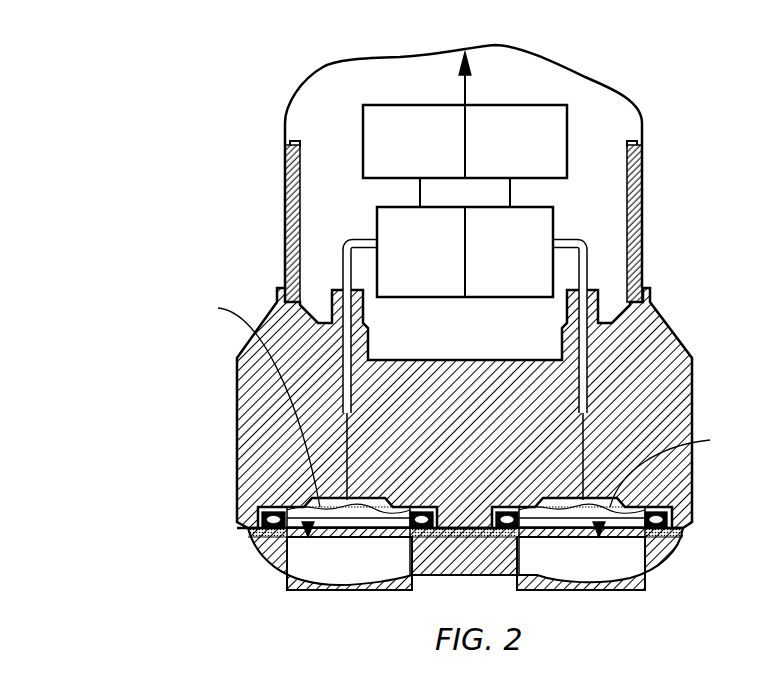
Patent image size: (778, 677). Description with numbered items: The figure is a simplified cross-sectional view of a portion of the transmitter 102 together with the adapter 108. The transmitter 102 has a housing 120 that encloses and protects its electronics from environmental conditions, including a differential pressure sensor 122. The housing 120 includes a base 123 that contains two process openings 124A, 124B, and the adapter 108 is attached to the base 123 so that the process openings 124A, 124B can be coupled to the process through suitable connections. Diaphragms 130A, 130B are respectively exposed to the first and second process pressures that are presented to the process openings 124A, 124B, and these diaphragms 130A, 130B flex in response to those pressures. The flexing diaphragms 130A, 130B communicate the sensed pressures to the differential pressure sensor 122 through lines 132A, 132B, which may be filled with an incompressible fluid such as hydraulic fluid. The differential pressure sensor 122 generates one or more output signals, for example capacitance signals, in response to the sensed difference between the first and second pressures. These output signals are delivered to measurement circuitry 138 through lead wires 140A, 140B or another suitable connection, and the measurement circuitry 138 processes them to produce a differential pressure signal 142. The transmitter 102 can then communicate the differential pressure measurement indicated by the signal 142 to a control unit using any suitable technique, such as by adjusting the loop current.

The transmitter 102 is at (195, 74).
The adapter 108 is at (667, 553).
The housing 120 is at (612, 93).
The differential pressure sensor 122 is at (538, 210).
The base 123 is at (660, 347).
The process opening 124A is at (308, 522).
The process opening 124B is at (599, 522).
The diaphragm 130A is at (246, 403).
The diaphragm 130B is at (683, 469).
The line 132A is at (350, 240).
The line 132B is at (585, 240).
The measurement circuitry 138 is at (519, 105).
The lead wire 140A is at (418, 195).
The lead wire 140B is at (512, 195).
The differential pressure signal 142 is at (463, 83).